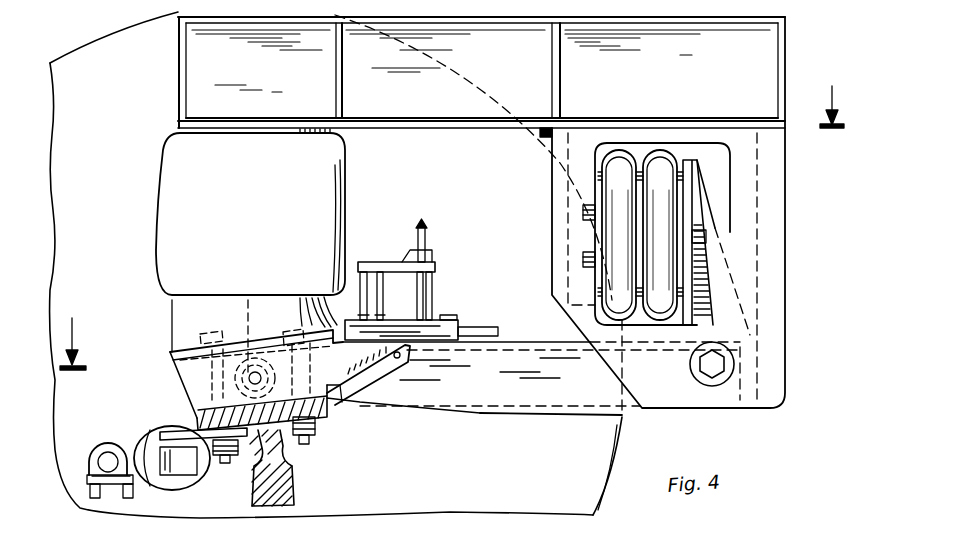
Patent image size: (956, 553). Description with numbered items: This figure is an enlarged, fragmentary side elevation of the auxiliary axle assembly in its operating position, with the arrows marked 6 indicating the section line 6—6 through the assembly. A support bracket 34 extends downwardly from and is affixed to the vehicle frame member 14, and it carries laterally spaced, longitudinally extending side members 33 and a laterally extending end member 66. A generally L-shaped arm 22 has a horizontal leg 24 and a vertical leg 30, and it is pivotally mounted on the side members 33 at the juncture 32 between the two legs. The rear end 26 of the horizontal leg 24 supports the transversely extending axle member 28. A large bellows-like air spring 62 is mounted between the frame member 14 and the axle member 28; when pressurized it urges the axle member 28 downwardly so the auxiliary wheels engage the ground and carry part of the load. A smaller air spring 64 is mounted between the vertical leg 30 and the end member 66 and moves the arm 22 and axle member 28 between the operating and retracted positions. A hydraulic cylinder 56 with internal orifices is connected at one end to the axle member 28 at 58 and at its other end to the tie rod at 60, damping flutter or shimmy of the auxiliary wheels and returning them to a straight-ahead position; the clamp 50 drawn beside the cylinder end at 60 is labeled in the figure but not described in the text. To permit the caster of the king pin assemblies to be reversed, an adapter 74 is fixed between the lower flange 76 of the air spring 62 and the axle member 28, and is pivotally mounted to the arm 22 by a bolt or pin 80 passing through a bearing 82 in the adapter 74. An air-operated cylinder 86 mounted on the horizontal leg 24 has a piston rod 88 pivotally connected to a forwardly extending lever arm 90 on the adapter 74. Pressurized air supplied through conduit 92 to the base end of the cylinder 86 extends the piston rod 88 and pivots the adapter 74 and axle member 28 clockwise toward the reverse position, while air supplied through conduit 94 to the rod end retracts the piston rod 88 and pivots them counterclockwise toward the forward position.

The section line 6- 6 is at (452, 216).
The frame member 14 is at (766, 18).
The arm 22 is at (630, 418).
The horizontal leg 24 is at (514, 358).
The rear end 26 is at (340, 402).
The axle member 28 is at (283, 490).
The vertical leg 30 is at (703, 193).
The juncture 32 is at (716, 367).
The side members 33 is at (745, 288).
The support bracket 34 is at (788, 213).
The clamp base 50 is at (120, 483).
The hydraulic cylinder 56 is at (158, 492).
The axle member connection 58 is at (217, 458).
The tie rod connection 60 is at (107, 443).
The air spring 62 is at (163, 170).
The smaller air spring 64 is at (662, 152).
The end member 66 is at (598, 230).
The adapter 74 is at (178, 372).
The lower flange 76 is at (168, 352).
The bolt or pin 80 is at (258, 368).
The bearing 82 is at (253, 296).
The air-operated cylinder 86 is at (436, 288).
The piston rod 88 is at (398, 332).
The lever arm 90 is at (390, 365).
The conduit 92 is at (422, 232).
The conduit 94 is at (486, 330).